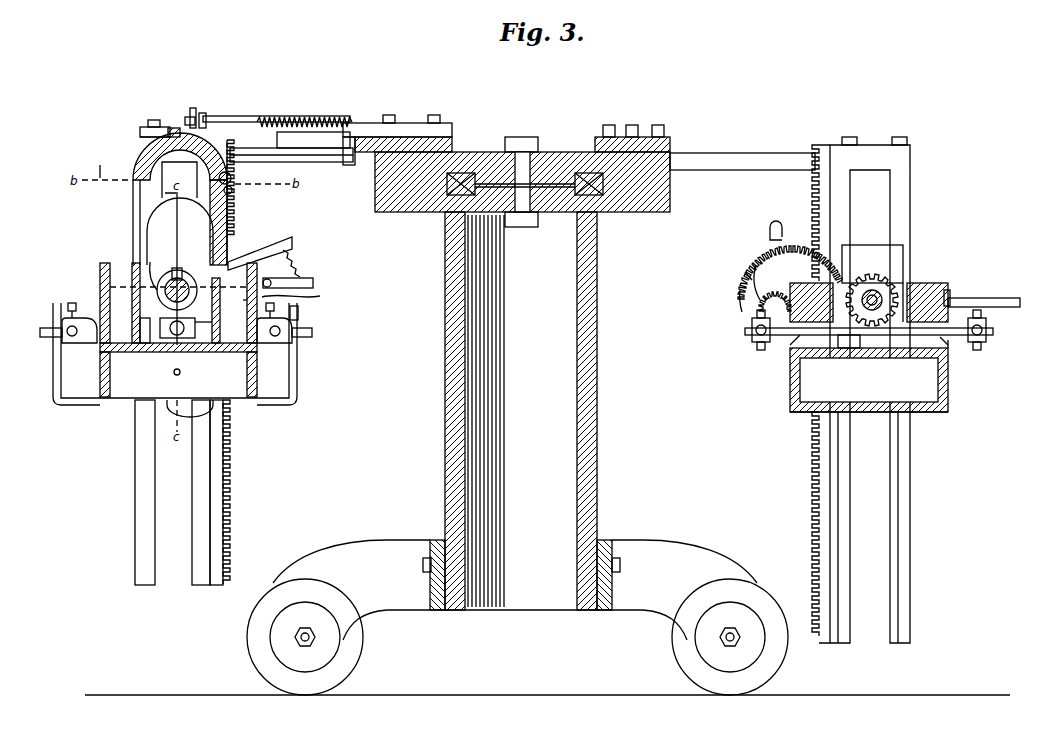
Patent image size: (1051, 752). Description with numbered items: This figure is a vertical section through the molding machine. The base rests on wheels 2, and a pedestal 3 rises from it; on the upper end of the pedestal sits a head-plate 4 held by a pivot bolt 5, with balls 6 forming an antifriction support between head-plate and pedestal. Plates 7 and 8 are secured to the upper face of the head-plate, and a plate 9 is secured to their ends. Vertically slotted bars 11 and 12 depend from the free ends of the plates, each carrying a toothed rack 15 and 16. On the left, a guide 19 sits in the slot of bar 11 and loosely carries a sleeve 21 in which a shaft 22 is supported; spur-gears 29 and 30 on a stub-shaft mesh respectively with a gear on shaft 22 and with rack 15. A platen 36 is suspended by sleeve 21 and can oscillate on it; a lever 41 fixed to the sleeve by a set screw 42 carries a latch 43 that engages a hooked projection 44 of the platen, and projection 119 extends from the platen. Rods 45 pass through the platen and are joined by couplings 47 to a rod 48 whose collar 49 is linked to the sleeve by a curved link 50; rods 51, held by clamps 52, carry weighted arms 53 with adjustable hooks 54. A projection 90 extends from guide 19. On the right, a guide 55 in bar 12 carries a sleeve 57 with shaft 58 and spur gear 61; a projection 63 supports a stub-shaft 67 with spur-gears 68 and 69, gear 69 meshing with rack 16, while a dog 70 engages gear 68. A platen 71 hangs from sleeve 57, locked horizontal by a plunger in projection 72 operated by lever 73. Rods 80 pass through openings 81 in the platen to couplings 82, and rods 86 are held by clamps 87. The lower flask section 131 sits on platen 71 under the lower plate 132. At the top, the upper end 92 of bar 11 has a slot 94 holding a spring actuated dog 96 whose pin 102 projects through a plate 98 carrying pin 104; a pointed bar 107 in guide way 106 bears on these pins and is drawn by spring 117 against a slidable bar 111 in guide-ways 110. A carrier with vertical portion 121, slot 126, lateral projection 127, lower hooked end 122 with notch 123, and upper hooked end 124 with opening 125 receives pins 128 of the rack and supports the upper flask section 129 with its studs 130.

The wheels 2 is at (688, 666).
The pedestal 3 is at (598, 405).
The head-plate 4 is at (562, 152).
The pivot bolt 5 is at (523, 137).
The balls 6 is at (590, 197).
The plate 7 is at (670, 140).
The plate 8 is at (452, 144).
The plate 9 is at (728, 155).
The vertically slotted bar 11 is at (135, 478).
The vertically slotted bar 12 is at (910, 505).
The toothed rack 15 is at (231, 462).
The toothed rack 16 is at (814, 503).
The guide 19 is at (140, 238).
The sleeve 21 is at (150, 262).
The shaft 22 is at (162, 284).
The spur-gear 29 is at (298, 260).
The spur-gear 30 is at (275, 282).
The platen 36 is at (100, 286).
The lever 41 is at (313, 284).
The set screw 42 is at (176, 268).
The latch 43 is at (320, 297).
The hooked projection 44 is at (250, 302).
The rods 45 is at (145, 343).
The coupling 47 is at (205, 338).
The rod 48 is at (190, 338).
The collar 49 is at (173, 337).
The curved link 50 is at (176, 258).
The rods 51 is at (312, 337).
The clamps 52 is at (292, 326).
The weighted arms 53 is at (275, 343).
The hook 54 is at (297, 384).
The guide 55 is at (903, 255).
The sleeve 57 is at (905, 285).
The shaft 58 is at (866, 278).
The spur gear 61 is at (948, 283).
The projection 63 is at (760, 290).
The stub-shaft 67 is at (740, 297).
The spur-gear 68 is at (745, 272).
The spur gear 69 is at (765, 282).
The dog 70 is at (780, 227).
The platen 71 is at (948, 355).
The lateral projection 72 is at (950, 292).
The lever 73 is at (1010, 298).
The rods 80 is at (993, 332).
The openings 81 is at (950, 342).
The coupling 82 is at (848, 348).
The rods 86 is at (986, 340).
The clamps 87 is at (986, 326).
The projection 90 is at (147, 224).
The upper end 92 is at (140, 150).
The slot 94 is at (196, 112).
The spring actuated dog 96 is at (170, 128).
The plate 98 is at (140, 130).
The pin 102 is at (190, 117).
The pin 104 is at (206, 116).
The guide way 106 is at (318, 117).
The pointed bar 107 is at (250, 116).
The guide-ways 110 is at (356, 162).
The slidable bar 111 is at (352, 165).
The spring 117 is at (360, 123).
The projection 119 is at (298, 310).
The vertical portion 121 is at (236, 214).
The lower hooked end 122 is at (213, 410).
The notch 123 is at (183, 400).
The upper hooked end 124 is at (138, 172).
The opening 125 is at (140, 134).
The slot 126 is at (233, 190).
The projection 127 is at (275, 244).
The pins 128 is at (232, 178).
The upper section of the flask 129 is at (128, 400).
The studs 130 is at (181, 373).
The lower section of the flask 131 is at (948, 392).
The lower plate 132 is at (918, 412).